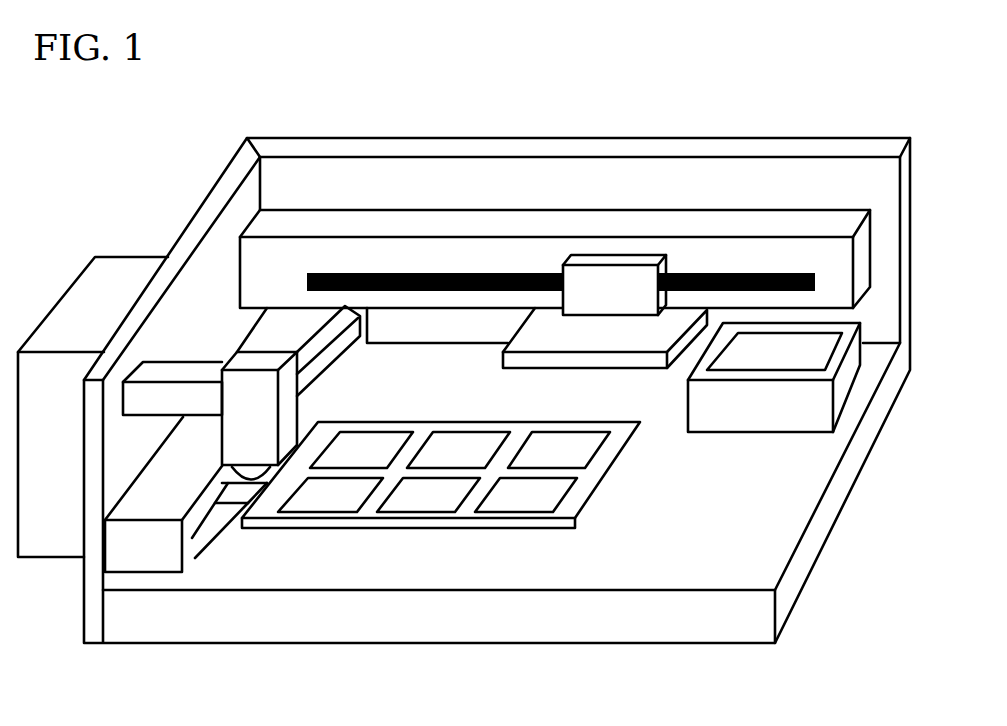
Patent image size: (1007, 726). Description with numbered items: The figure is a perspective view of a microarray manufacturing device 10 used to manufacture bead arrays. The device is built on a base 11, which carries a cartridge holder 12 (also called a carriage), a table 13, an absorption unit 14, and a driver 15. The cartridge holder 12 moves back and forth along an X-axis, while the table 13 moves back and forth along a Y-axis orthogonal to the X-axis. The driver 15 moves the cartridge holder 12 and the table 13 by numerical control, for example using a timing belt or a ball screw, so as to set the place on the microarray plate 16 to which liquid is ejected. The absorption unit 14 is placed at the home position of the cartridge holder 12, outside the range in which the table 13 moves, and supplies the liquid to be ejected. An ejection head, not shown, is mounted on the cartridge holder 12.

The microarray manufacturing device 10 is at (528, 193).
The base 11 is at (802, 570).
The cartridge holder 12 is at (565, 339).
The table 13 is at (508, 535).
The absorption unit 14 is at (763, 392).
The driver 15 is at (108, 285).
The microarray plate 16 is at (327, 502).